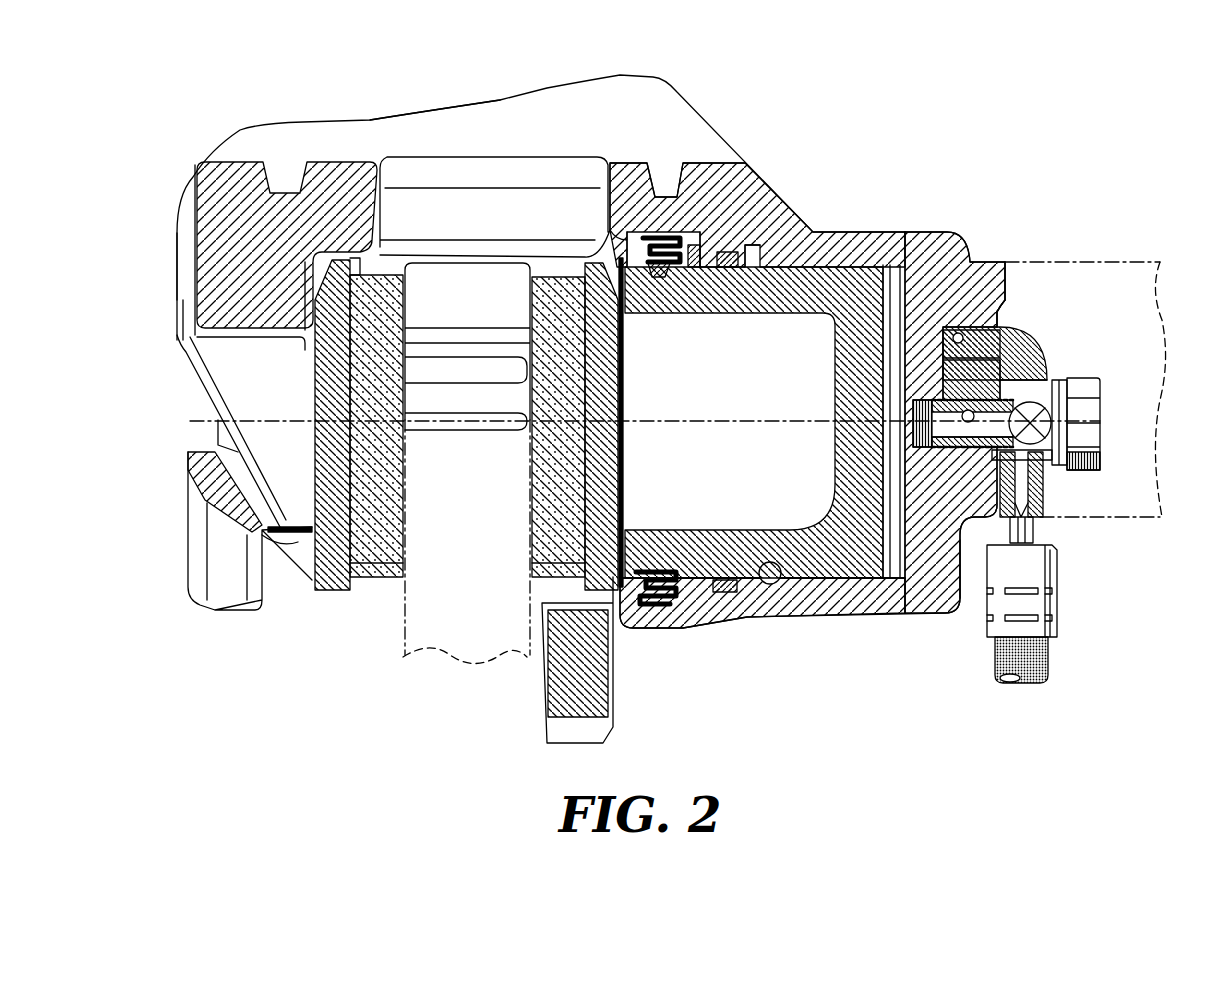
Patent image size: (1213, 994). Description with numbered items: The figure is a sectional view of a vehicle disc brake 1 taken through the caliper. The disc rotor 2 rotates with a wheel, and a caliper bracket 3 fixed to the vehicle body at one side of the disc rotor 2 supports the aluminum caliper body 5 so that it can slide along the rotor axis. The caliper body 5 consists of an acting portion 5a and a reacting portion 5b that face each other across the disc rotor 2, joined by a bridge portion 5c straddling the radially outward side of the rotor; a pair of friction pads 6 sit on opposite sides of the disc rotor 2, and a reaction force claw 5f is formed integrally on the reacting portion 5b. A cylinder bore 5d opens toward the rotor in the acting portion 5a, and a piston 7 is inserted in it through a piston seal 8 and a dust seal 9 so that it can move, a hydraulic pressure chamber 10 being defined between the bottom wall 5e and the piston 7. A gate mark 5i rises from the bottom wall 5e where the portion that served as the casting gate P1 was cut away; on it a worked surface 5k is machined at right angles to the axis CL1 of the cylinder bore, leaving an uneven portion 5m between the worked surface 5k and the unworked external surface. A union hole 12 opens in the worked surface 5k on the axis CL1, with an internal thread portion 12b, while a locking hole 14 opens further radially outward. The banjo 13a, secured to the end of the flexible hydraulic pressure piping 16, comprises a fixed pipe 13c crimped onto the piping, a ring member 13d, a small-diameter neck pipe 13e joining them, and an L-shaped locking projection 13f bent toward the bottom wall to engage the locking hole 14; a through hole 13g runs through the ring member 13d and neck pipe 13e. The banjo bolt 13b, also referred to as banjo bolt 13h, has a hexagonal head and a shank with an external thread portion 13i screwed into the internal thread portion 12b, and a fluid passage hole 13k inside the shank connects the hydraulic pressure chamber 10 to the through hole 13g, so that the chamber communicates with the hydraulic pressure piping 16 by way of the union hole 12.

The vehicle disc brake 1 is at (660, 49).
The disc rotor 2 is at (450, 662).
The caliper bracket 3 is at (600, 670).
The caliper body 5 is at (727, 115).
The acting portion 5a is at (888, 605).
The reacting portion 5b is at (232, 162).
The bridge portion 5c is at (492, 118).
The cylinder bore 5d is at (768, 585).
The bottom wall 5e is at (960, 570).
The reaction force claw 5f is at (298, 538).
The gate mark 5i is at (1010, 282).
The worked surface 5k is at (999, 322).
The uneven portion 5m is at (1002, 306).
The friction pad 6 is at (535, 495).
The piston 7 is at (850, 272).
The piston seal 8 is at (728, 270).
The dust seal 9 is at (690, 272).
The hydraulic pressure chamber 10 is at (885, 518).
The union hole 12 is at (920, 417).
The internal thread portion 12b is at (978, 450).
The banjo 13a is at (1046, 486).
The banjo bolt 13b is at (1108, 412).
The fixed pipe 13c is at (1048, 567).
The ring member 13d is at (1060, 382).
The neck pipe 13e is at (1038, 522).
The locking projection 13f is at (1028, 348).
The through hole 13g is at (1032, 478).
The banjo bolt 13h is at (1090, 430).
The external thread portion 13i is at (945, 400).
The fluid passage hole 13k is at (967, 408).
The locking hole 14 is at (957, 327).
The hydraulic pressure piping 16 is at (1050, 655).
The axis of the cylinder bore CL1 is at (688, 426).
The gate P1 is at (1098, 262).